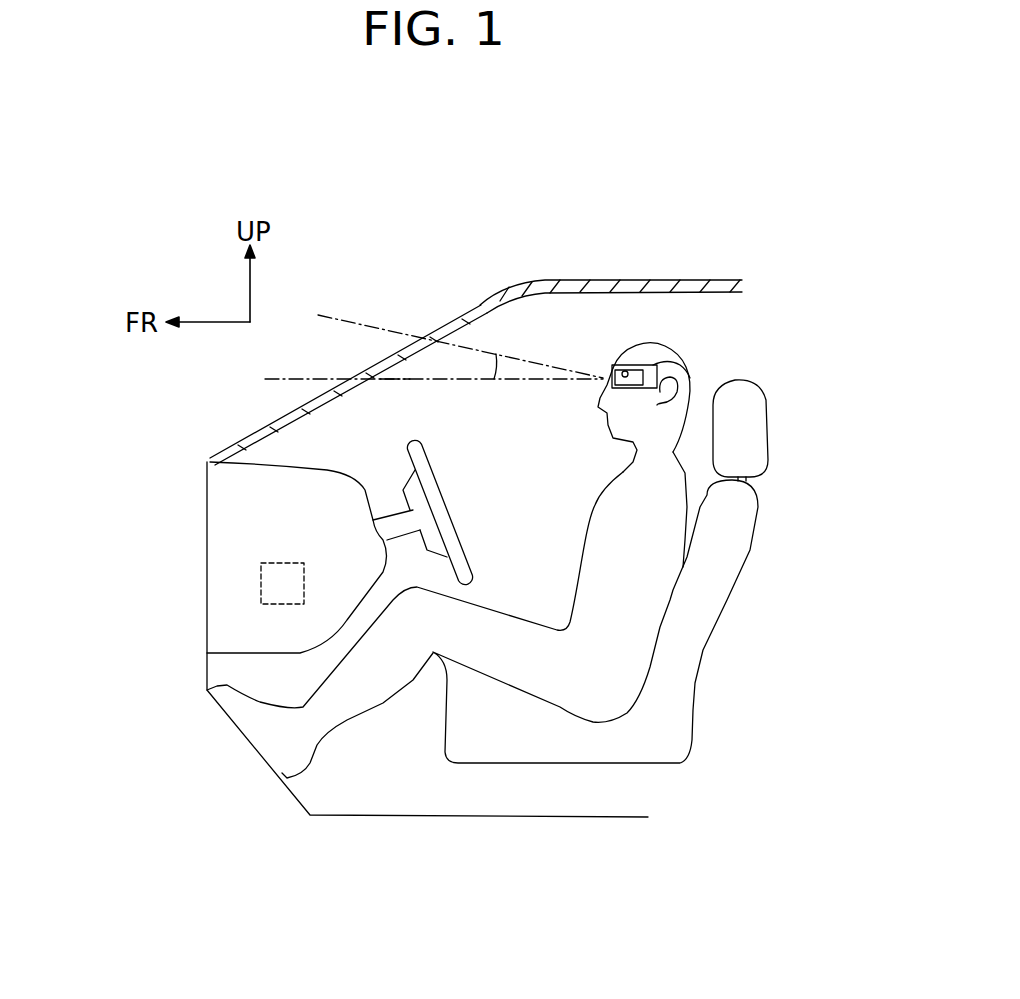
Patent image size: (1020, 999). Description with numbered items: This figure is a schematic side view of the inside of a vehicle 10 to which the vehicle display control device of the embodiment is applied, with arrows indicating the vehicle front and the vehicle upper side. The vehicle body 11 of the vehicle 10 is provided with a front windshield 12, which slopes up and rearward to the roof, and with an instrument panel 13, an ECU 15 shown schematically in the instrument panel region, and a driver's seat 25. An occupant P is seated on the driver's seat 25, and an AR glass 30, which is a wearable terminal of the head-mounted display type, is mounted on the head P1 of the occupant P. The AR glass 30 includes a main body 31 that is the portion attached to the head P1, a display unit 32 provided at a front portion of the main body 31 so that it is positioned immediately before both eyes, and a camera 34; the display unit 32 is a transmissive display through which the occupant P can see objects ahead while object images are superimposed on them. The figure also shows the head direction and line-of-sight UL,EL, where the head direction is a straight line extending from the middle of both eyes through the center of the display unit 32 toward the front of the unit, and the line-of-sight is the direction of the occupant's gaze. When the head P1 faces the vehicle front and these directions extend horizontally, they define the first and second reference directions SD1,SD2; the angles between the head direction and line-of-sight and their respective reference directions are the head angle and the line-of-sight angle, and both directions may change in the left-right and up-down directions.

The vehicle 10 is at (508, 246).
The vehicle body 11 is at (688, 278).
The front windshield 12 is at (443, 323).
The instrument panel 13 is at (335, 478).
The ECU 15 is at (270, 606).
The driver's seat 25 is at (682, 708).
The AR glass 30 is at (645, 361).
The main body 31 is at (672, 363).
The display unit 32 is at (612, 379).
The camera 34 is at (620, 370).
The occupant P is at (494, 547).
The head P1 is at (677, 357).
The head direction and line-of-sight UL,EL is at (352, 318).
The first reference direction and second reference direction SD1,SD2 is at (393, 381).